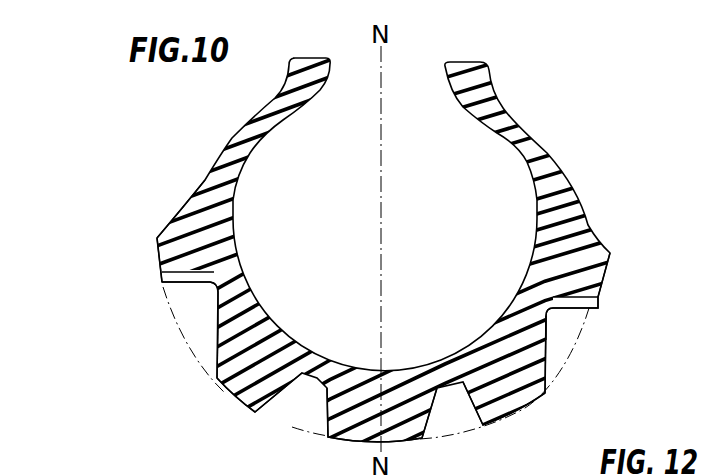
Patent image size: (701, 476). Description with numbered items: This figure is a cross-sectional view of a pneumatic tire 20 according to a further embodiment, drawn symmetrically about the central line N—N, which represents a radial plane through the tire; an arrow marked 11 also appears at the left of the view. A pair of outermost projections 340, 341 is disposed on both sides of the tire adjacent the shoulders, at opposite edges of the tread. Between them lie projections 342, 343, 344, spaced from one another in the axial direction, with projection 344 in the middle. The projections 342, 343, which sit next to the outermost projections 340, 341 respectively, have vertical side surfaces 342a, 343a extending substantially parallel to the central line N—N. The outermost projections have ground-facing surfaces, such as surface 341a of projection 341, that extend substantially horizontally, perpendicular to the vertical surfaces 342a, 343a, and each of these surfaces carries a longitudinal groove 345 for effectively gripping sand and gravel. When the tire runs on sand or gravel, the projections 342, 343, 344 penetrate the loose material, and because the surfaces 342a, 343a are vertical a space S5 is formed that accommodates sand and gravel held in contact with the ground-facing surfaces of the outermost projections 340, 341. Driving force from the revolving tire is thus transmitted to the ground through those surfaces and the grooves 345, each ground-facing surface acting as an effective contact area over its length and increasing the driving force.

The retaining clip 11 is at (122, 243).
The tire 20 is at (602, 134).
The projection 340 is at (163, 247).
The projection 341 is at (600, 271).
The side surface 341a is at (572, 312).
The projection 342 is at (255, 390).
The vertical side surface 342a is at (218, 363).
The projection 343 is at (515, 393).
The vertical side surface 343a is at (545, 363).
The projection 344 is at (407, 443).
The longitudinal groove 345 is at (177, 283).
The space S5 is at (201, 331).